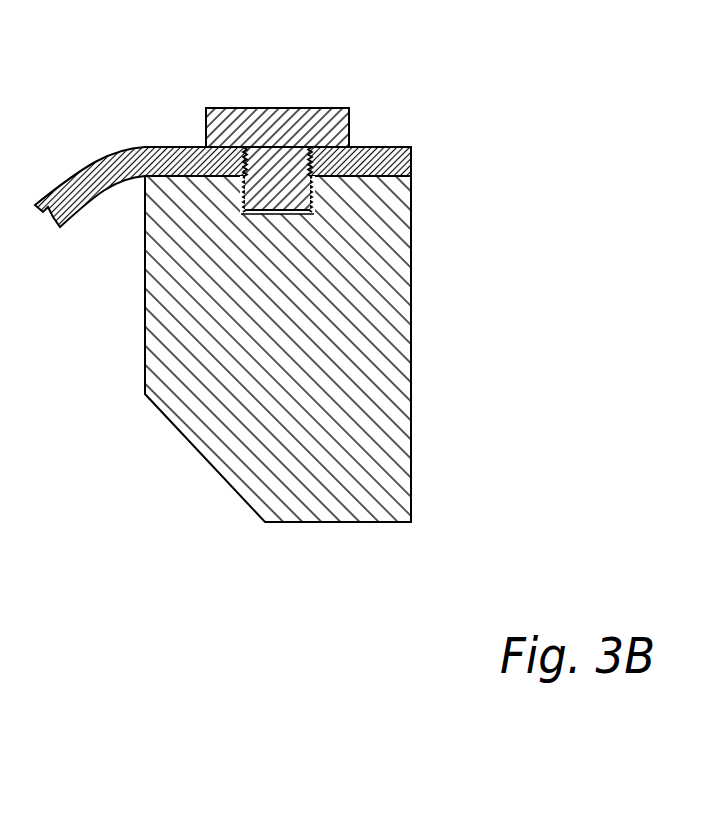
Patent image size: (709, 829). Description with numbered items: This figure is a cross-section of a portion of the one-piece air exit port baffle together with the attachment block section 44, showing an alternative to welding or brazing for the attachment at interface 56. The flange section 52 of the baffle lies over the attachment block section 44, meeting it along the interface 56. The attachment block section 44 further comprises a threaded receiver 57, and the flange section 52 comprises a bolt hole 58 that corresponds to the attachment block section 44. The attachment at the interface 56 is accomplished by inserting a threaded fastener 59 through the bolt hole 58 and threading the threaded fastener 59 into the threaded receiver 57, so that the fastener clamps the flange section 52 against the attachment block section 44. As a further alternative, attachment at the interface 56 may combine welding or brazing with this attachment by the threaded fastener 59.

The attachment block section 44 is at (413, 264).
The flange section 52 is at (131, 146).
The interface 56 is at (412, 176).
The threaded receiver 57 is at (247, 197).
The bolt hole 58 is at (317, 162).
The threaded fastener 59 is at (270, 107).